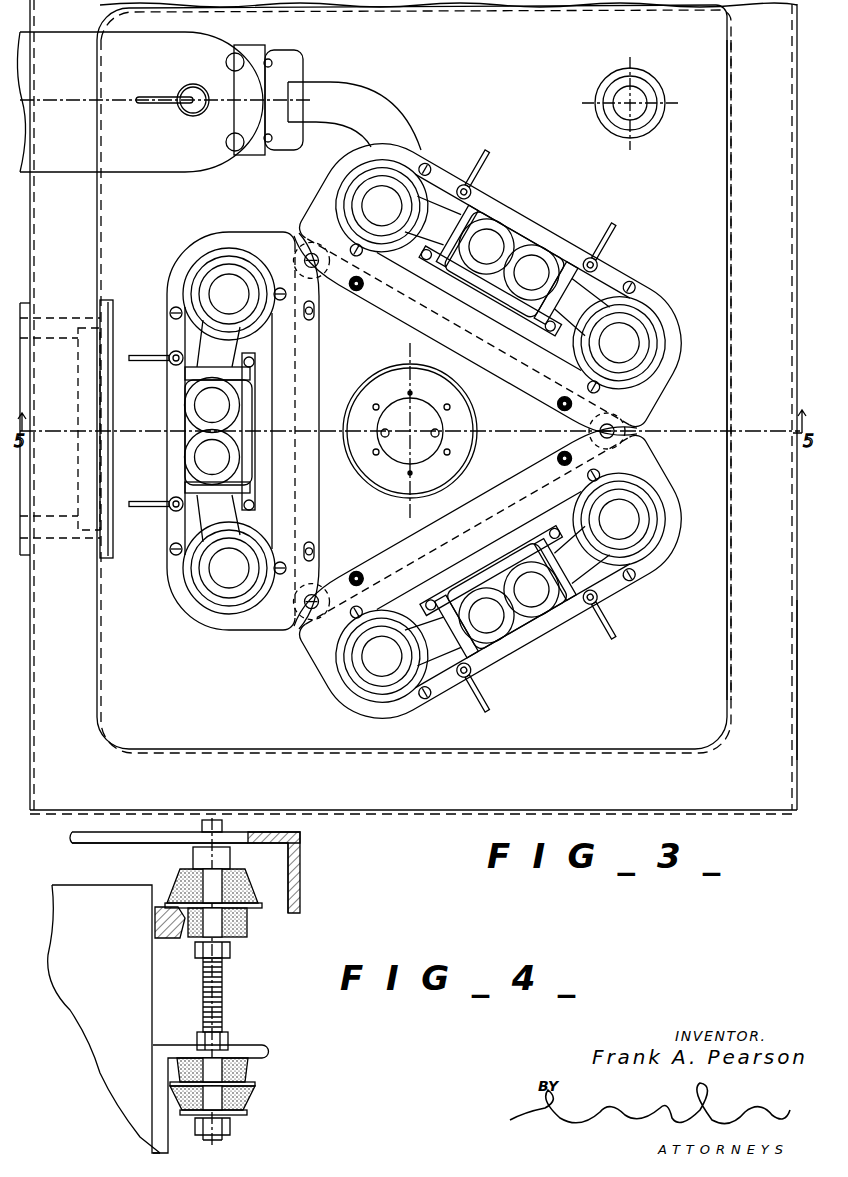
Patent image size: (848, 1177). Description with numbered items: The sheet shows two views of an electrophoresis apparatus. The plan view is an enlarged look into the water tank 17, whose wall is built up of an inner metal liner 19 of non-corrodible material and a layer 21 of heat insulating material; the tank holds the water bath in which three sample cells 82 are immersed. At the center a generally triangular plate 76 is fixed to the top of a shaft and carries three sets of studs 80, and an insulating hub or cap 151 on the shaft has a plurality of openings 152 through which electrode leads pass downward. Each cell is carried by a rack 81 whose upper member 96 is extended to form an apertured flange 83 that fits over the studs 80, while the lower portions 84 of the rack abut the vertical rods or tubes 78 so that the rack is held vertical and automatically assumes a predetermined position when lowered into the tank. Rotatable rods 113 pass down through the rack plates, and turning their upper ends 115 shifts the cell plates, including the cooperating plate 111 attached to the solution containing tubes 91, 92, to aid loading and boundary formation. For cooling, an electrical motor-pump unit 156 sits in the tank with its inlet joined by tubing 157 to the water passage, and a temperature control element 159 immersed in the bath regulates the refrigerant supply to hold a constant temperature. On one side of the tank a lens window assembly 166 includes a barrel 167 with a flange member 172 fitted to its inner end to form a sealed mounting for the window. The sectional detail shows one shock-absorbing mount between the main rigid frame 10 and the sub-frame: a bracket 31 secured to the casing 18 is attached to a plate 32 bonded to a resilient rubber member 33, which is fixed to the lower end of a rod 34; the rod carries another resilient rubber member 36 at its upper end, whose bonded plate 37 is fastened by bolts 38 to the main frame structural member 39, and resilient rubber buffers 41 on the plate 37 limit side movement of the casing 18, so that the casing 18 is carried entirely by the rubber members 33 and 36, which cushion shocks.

In FIG. 3, the electrical motor-pump unit 156 is at (292, 56).
In FIG. 3, the tubing 157 is at (343, 94).
In FIG. 3, the temperature control element 159 is at (190, 108).
In FIG. 3, the sample cell 82 is at (226, 258).
In FIG. 3, the flange member 172 is at (104, 302).
In FIG. 3, the upper ends of the rods 115 is at (141, 350).
In FIG. 3, the rotatable rods 113 is at (170, 362).
In FIG. 3, the rack 81 is at (161, 417).
In FIG. 3, the upper member 96 is at (166, 458).
In FIG. 3, the barrel 167 is at (52, 514).
In FIG. 3, the lens window assembly 166 is at (116, 563).
In FIG. 3, the vertical rods or tubes 78 is at (316, 273).
In FIG. 3, the studs 80 is at (354, 290).
In FIG. 3, the flange 83 is at (319, 341).
In FIG. 3, the lower portions 84 is at (300, 634).
In FIG. 3, the layer of heat insulating material 21 is at (727, 146).
In FIG. 3, the inner metal liner 19 is at (722, 658).
In FIG. 3, the water tank 17 is at (720, 690).
In FIG. 3, the insulating hub or cap 151 is at (463, 423).
In FIG. 3, the openings 152 is at (407, 474).
In FIG. 3, the plate 76 is at (361, 517).
In FIG. 3, the cooperating plate 111 is at (504, 574).
In FIG. 3, the solution containing tube 92 is at (566, 619).
In FIG. 3, the solution containing tube 91 is at (511, 660).
In FIG. 4, the main frame structural member 39 is at (93, 838).
In FIG. 4, the bolts 38 is at (203, 828).
In FIG. 4, the main rigid frame 10 is at (308, 887).
In FIG. 4, the plate 37 is at (250, 906).
In FIG. 4, the resilient rubber member 36 is at (236, 930).
In FIG. 4, the resilient rubber buffers 41 is at (170, 941).
In FIG. 4, the rod 34 is at (223, 993).
In FIG. 4, the casing 18 is at (86, 1016).
In FIG. 4, the bracket 31 is at (261, 1050).
In FIG. 4, the plate 32 is at (255, 1085).
In FIG. 4, the resilient rubber member 33 is at (247, 1105).